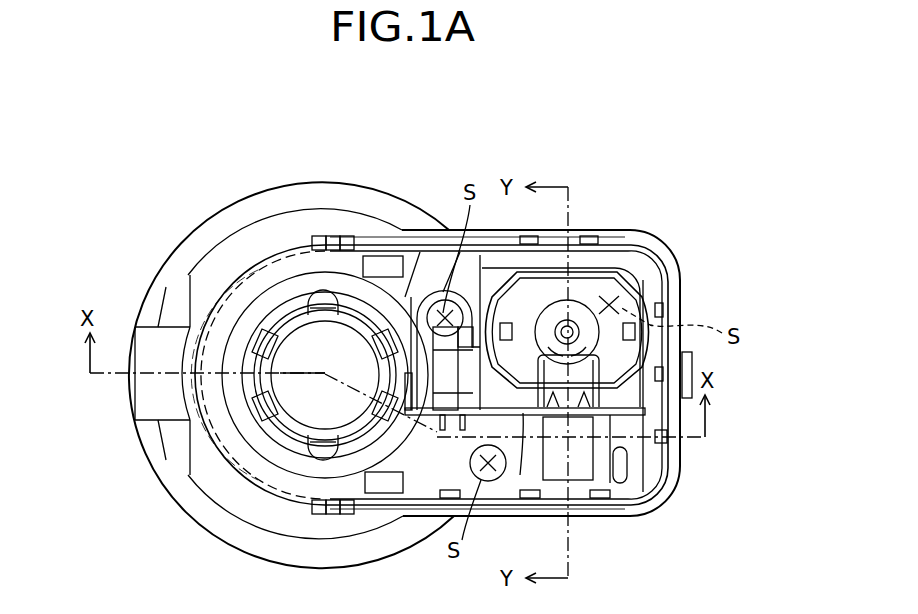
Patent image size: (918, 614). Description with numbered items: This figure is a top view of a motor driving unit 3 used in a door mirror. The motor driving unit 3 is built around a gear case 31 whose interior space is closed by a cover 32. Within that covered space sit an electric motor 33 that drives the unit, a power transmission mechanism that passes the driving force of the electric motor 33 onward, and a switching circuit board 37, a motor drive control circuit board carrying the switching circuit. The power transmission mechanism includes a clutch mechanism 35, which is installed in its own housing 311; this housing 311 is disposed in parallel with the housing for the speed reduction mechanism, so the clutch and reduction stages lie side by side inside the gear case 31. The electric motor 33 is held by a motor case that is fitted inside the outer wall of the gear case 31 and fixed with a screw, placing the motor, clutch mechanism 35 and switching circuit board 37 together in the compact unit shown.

The motor driving unit 3 is at (563, 158).
The gear case 31 is at (212, 222).
The housing for the clutch mechanism 311 is at (243, 300).
The cover 32 is at (582, 273).
The electric motor 33 is at (607, 282).
The clutch mechanism 35 is at (243, 440).
The switching circuit board 37 is at (520, 475).